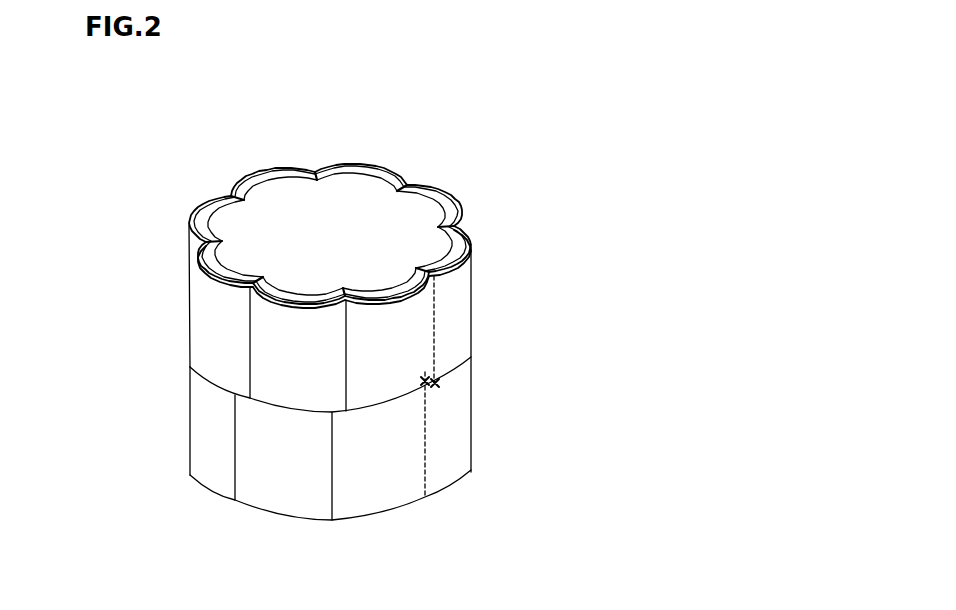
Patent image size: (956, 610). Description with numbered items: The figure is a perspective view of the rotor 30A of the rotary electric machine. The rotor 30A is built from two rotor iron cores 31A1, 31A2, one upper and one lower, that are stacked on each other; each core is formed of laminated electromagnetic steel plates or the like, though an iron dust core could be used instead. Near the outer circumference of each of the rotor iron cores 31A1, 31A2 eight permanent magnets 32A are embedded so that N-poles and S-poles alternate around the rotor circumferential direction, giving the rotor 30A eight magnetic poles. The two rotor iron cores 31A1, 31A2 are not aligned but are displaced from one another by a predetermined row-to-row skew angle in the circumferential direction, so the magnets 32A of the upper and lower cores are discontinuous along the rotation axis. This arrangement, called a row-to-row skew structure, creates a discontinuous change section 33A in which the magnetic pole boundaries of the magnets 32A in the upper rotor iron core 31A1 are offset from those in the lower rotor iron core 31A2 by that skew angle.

The rotor 30A is at (501, 175).
The upper rotor iron core 31A1 is at (290, 207).
The lower rotor iron core 31A2 is at (408, 468).
The permanent magnet 32A is at (462, 243).
The discontinuous change section 33A is at (483, 338).